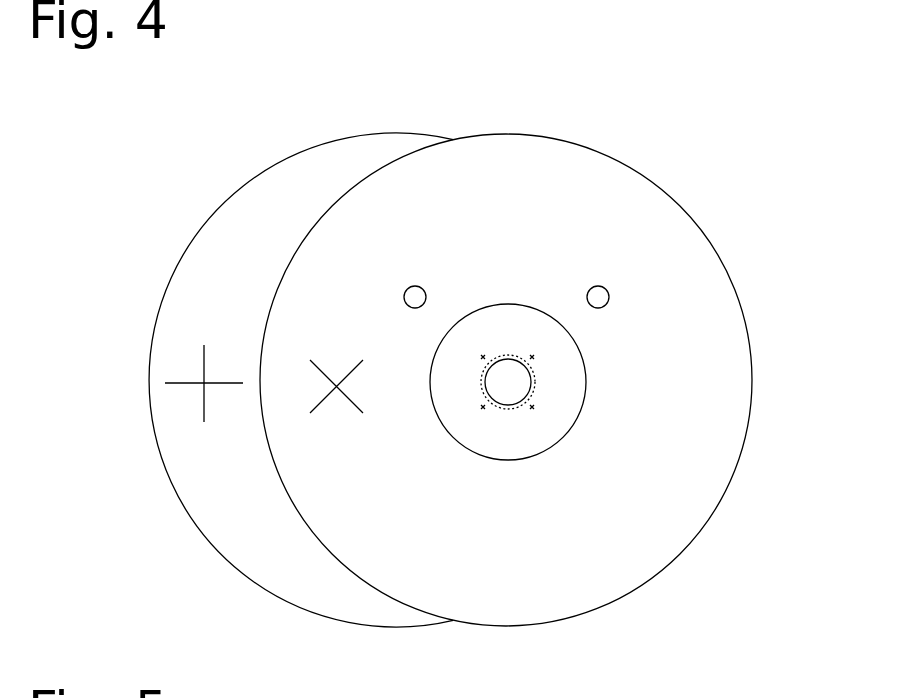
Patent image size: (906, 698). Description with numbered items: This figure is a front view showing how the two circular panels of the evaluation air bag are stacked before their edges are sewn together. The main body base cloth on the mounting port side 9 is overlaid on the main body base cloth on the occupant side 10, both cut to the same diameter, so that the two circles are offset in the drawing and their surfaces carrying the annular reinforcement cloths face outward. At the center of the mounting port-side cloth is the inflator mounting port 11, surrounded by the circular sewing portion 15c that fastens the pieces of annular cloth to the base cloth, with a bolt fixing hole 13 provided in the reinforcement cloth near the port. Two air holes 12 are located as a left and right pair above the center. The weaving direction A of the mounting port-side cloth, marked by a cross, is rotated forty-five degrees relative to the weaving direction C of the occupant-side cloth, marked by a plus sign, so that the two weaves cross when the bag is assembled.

The main body base cloth on mounting port side 9 is at (504, 217).
The main body base cloth on occupant side 10 is at (298, 205).
The inflator mounting port 11 is at (508, 387).
The air hole 12 is at (600, 282).
The bolt fixing hole 13 is at (535, 405).
The sewing portion 15c is at (497, 410).
The weaving direction of main body base cloth 9 A is at (337, 363).
The weaving direction of main body base cloth 10 C is at (204, 333).